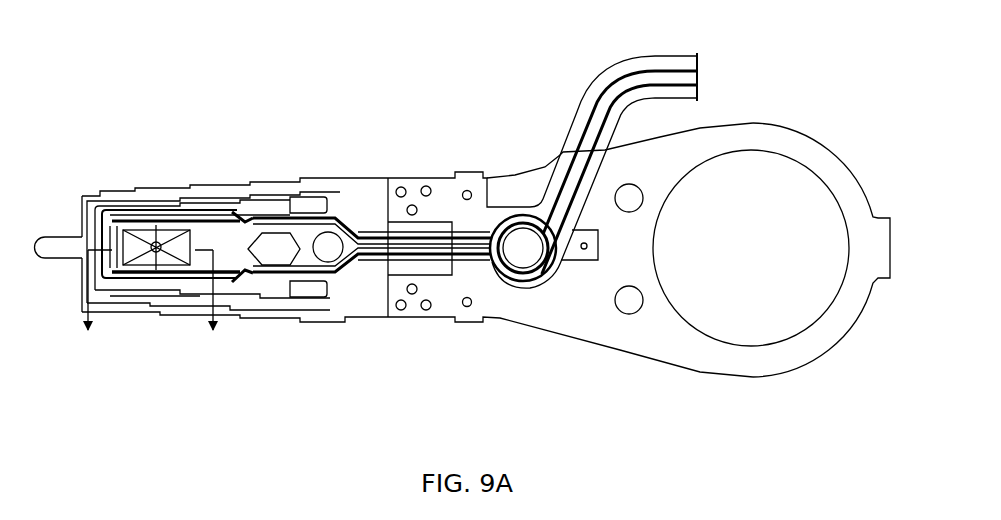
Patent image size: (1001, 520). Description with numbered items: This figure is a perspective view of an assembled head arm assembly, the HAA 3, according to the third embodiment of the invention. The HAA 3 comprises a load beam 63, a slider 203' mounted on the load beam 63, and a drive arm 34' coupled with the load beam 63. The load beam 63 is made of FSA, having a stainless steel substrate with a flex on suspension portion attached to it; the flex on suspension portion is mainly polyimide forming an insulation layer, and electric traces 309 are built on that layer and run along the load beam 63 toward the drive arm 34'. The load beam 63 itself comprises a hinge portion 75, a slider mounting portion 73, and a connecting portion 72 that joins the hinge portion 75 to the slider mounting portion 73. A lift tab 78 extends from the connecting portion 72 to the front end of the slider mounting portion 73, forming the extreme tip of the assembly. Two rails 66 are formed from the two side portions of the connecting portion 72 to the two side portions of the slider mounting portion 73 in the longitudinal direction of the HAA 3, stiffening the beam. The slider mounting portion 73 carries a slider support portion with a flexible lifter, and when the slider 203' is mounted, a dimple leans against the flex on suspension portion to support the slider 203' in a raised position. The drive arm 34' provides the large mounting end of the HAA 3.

The HAA 3 is at (456, 133).
The drive arm 34' is at (729, 280).
The load beam 63 is at (323, 103).
The rails 66 is at (263, 319).
The connecting portion 72 is at (265, 200).
The slider mounting portion 73 is at (178, 206).
The hinge portion 75 is at (452, 206).
The lift tab 78 is at (52, 249).
The slider 203' is at (166, 186).
The electric traces 309 is at (367, 262).